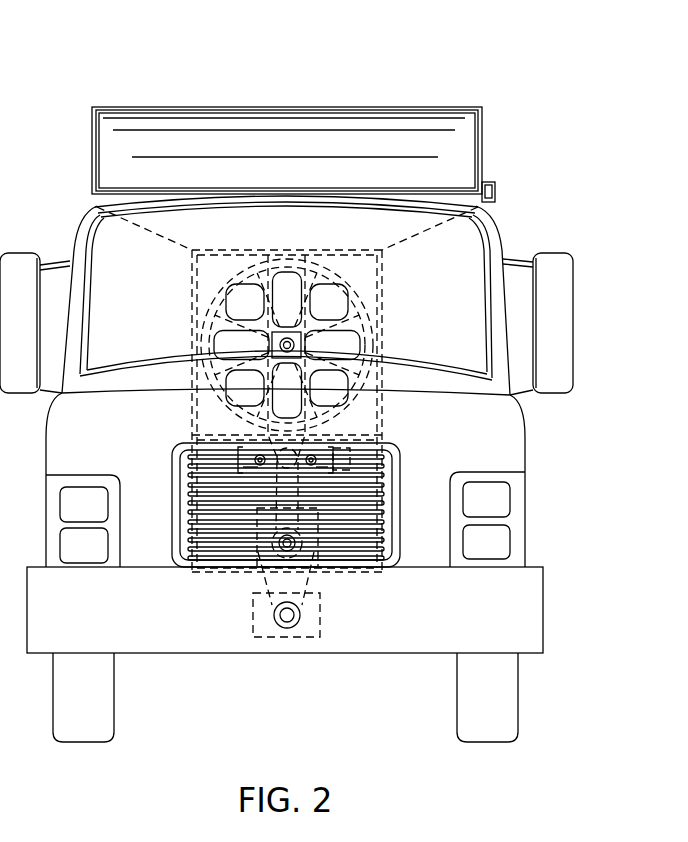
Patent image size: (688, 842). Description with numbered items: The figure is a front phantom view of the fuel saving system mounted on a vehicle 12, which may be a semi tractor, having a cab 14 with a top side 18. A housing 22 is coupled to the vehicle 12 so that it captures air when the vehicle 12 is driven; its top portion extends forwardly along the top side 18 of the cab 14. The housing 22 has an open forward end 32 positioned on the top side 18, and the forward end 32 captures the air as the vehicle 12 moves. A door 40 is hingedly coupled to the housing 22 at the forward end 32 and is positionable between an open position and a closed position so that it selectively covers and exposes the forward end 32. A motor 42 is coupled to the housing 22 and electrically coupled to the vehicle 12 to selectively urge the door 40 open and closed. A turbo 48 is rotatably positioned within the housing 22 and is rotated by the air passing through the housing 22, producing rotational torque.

The vehicle 12 is at (552, 239).
The cab 14 is at (78, 228).
The top side 18 is at (308, 198).
The housing 22 is at (160, 107).
The forward end 32 is at (422, 110).
The door 40 is at (115, 142).
The motor 42 is at (497, 188).
The turbo 48 is at (236, 278).